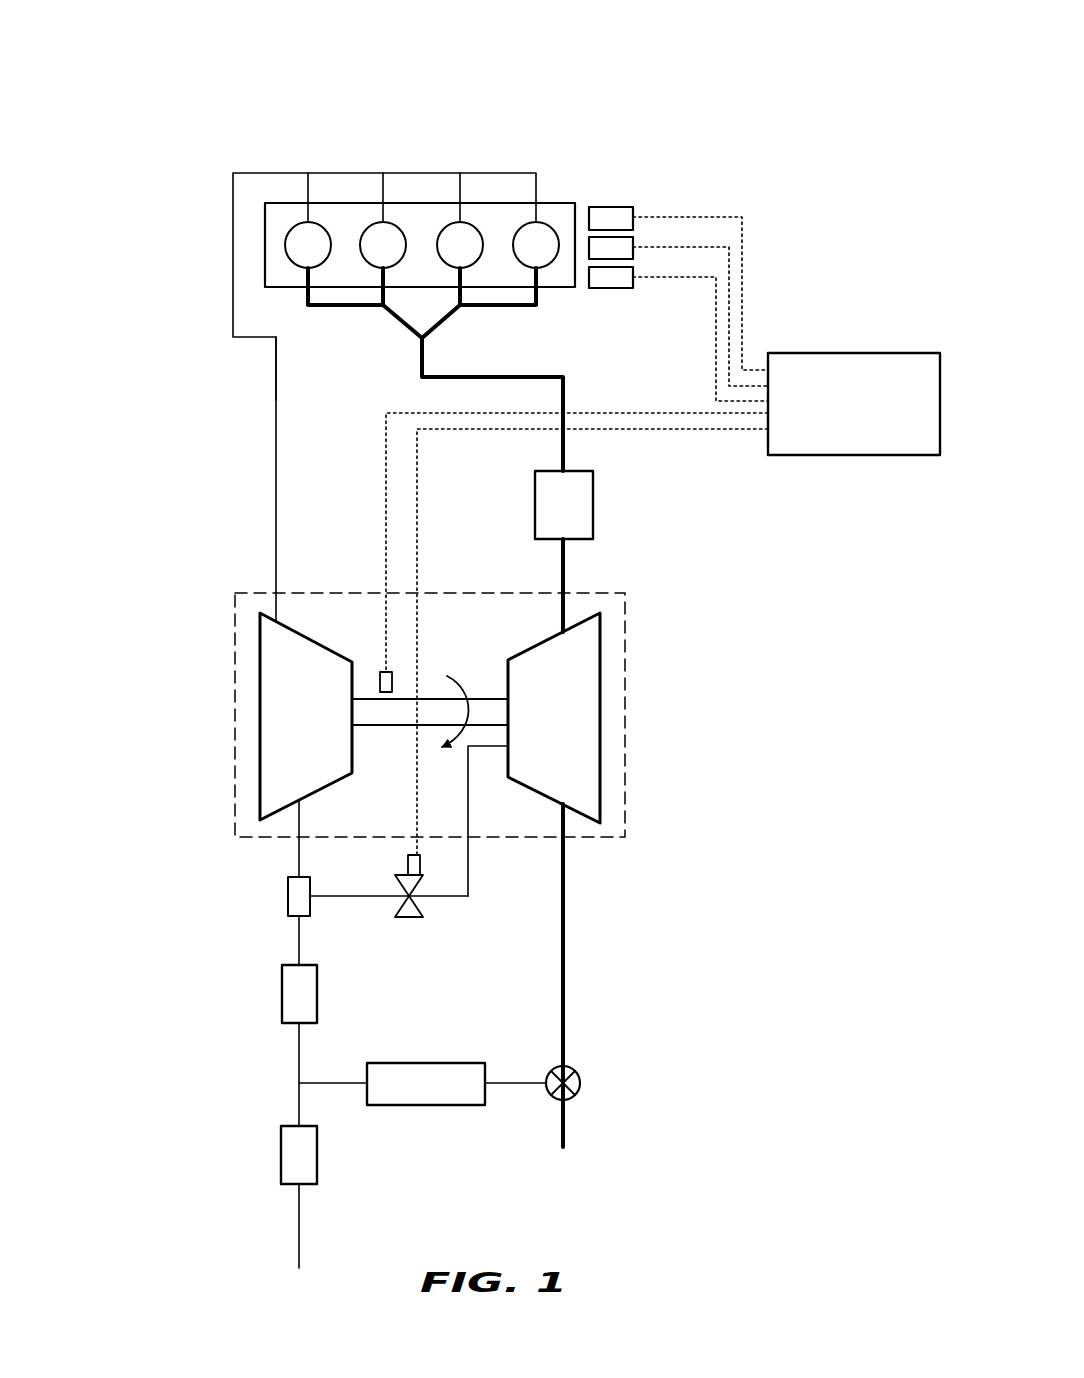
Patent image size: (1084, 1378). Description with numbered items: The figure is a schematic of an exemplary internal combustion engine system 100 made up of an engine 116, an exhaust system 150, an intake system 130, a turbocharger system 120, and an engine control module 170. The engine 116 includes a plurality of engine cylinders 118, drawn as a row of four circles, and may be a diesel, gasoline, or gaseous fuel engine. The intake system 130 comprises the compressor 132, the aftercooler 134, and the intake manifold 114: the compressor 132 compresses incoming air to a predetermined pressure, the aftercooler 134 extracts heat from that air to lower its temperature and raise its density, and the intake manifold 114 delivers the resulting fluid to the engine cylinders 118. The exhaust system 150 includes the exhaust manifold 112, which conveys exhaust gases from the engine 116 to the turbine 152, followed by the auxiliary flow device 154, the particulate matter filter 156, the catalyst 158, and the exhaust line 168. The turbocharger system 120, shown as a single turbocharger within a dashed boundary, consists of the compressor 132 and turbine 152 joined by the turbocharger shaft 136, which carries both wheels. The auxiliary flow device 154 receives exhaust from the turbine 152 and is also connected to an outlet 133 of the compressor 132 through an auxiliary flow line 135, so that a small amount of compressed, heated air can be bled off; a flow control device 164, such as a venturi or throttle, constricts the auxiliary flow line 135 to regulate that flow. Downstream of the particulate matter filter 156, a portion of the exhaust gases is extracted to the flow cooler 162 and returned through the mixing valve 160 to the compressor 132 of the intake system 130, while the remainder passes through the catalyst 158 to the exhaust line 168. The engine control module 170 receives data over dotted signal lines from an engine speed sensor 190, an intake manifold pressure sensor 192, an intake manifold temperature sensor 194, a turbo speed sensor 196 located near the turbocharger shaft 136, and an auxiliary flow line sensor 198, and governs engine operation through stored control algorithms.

The internal combustion engine system 100 is at (826, 124).
The exhaust manifold 112 is at (256, 173).
The intake manifold 114 is at (444, 322).
The engine 116 is at (575, 203).
The engine cylinders 118 is at (286, 250).
The turbocharger system 120 is at (630, 716).
The intake system 130 is at (780, 708).
The compressor 132 is at (590, 838).
The outlet 133 is at (503, 747).
The aftercooler 134 is at (583, 515).
The auxiliary flow line 135 is at (470, 900).
The turbocharger shaft 136 is at (433, 700).
The exhaust system 150 is at (134, 702).
The turbine 152 is at (260, 708).
The auxiliary flow device 154 is at (288, 894).
The particulate matter filter 156 is at (282, 995).
The catalyst 158 is at (281, 1152).
The mixing valve 160 is at (580, 1087).
The flow cooler 162 is at (445, 1098).
The flow control device 164 is at (409, 920).
The exhaust line 168 is at (299, 1213).
The engine control module 170 is at (875, 415).
The engine speed sensor 190 is at (633, 218).
The intake manifold pressure sensor 192 is at (633, 248).
The intake manifold temperature sensor 194 is at (633, 278).
The turbo speed sensor 196 is at (384, 672).
The auxiliary flow line sensor 198 is at (420, 860).